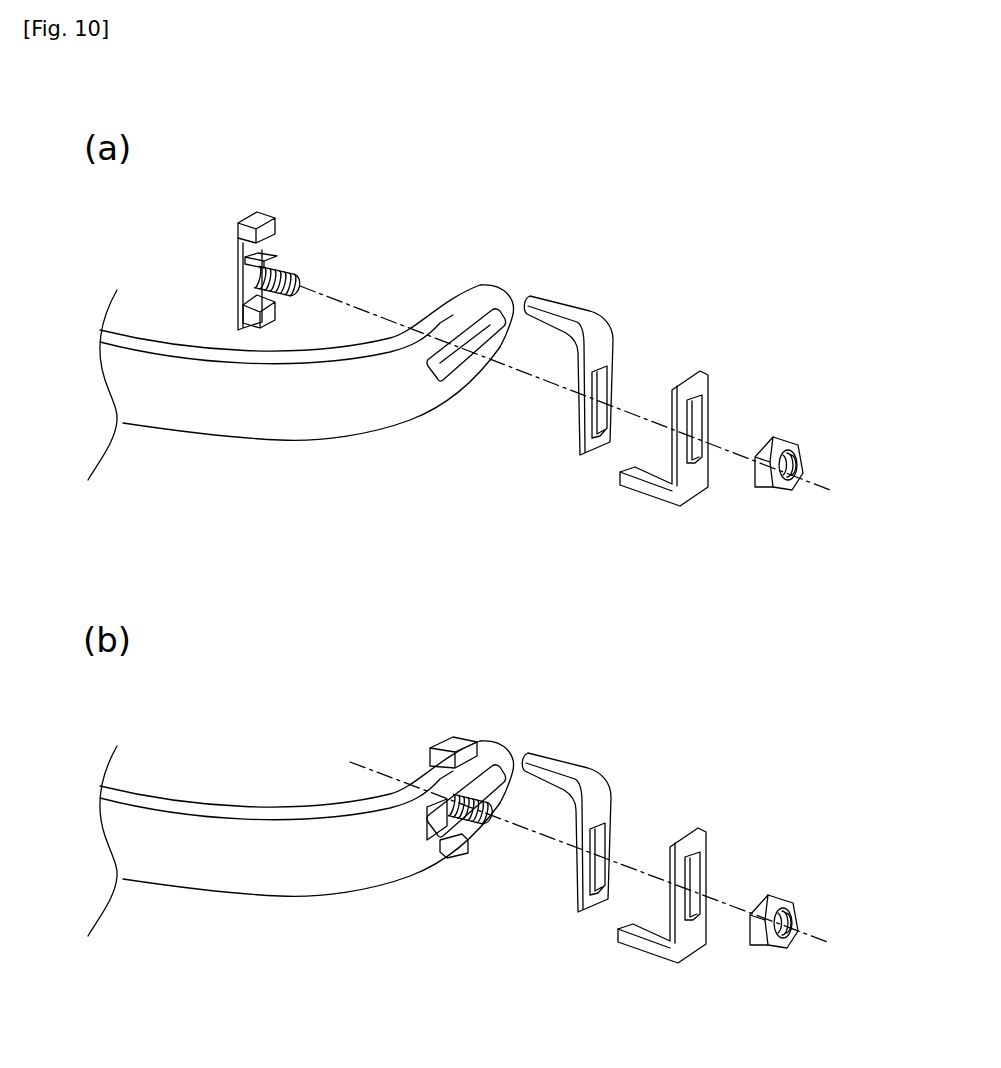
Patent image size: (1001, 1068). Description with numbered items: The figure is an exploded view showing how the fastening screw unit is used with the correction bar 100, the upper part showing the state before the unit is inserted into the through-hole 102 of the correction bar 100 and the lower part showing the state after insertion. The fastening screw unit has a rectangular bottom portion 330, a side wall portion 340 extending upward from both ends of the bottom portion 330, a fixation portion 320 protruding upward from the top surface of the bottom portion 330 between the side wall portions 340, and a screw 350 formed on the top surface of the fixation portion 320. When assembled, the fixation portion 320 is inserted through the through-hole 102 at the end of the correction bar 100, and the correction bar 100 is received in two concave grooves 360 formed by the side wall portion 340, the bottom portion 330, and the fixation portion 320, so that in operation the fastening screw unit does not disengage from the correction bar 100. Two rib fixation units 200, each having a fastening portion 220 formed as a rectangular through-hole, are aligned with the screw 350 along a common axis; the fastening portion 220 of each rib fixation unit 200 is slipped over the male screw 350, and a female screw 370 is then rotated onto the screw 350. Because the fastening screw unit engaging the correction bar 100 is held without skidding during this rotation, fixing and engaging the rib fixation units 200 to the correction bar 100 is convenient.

The correction bar 100 is at (230, 423).
The through-hole 102 is at (457, 362).
The rib fixation unit 200 is at (619, 300).
The fastening portion 220 is at (600, 383).
The fixation portion 320 is at (275, 258).
The bottom portion 330 is at (238, 252).
The side wall portion 340 is at (260, 213).
The screw 350 is at (299, 285).
The concave groove 360 is at (275, 233).
The female screw 370 is at (778, 492).